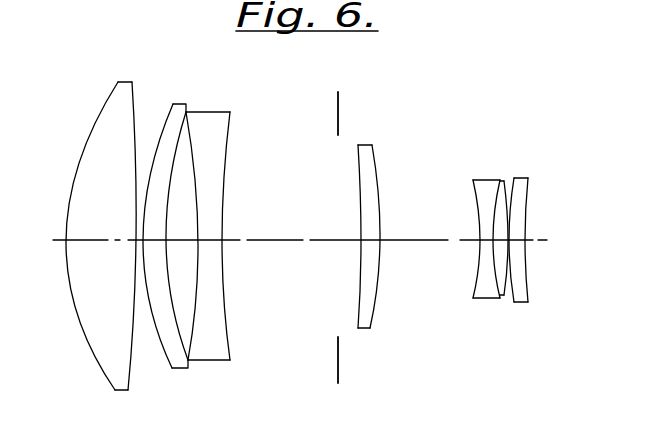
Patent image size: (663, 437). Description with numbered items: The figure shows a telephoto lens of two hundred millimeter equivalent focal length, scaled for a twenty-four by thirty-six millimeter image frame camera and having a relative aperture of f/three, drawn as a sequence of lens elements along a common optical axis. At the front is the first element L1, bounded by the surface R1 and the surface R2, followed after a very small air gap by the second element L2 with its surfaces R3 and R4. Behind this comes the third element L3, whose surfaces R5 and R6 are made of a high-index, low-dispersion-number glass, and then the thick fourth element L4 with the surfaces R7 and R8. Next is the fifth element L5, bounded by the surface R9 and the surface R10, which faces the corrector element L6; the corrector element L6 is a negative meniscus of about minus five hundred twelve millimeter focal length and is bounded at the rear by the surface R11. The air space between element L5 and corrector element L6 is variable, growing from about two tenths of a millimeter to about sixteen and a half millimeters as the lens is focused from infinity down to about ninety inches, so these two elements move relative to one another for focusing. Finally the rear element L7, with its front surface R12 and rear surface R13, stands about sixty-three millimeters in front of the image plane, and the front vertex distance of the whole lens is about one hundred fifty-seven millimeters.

The first lens element L1 is at (86, 241).
The second lens element L2 is at (202, 238).
The third lens element L3 is at (231, 217).
The fourth lens element L4 is at (369, 211).
The fifth lens element L5 is at (459, 223).
The corrector element L6 is at (516, 237).
The seventh lens element L7 is at (552, 221).
The first lens surface R1 is at (80, 330).
The second lens surface R2 is at (134, 372).
The third lens surface R3 is at (163, 355).
The fourth lens surface R4 is at (172, 305).
The fifth lens surface R5 is at (198, 222).
The sixth lens surface R6 is at (227, 170).
The seventh lens surface R7 is at (358, 298).
The eighth lens surface R8 is at (377, 268).
The ninth lens surface R9 is at (472, 290).
The tenth lens surface R10 is at (493, 262).
The eleventh lens surface R11 is at (503, 290).
The twelfth lens surface R12 is at (510, 275).
The thirteenth lens surface R13 is at (527, 215).